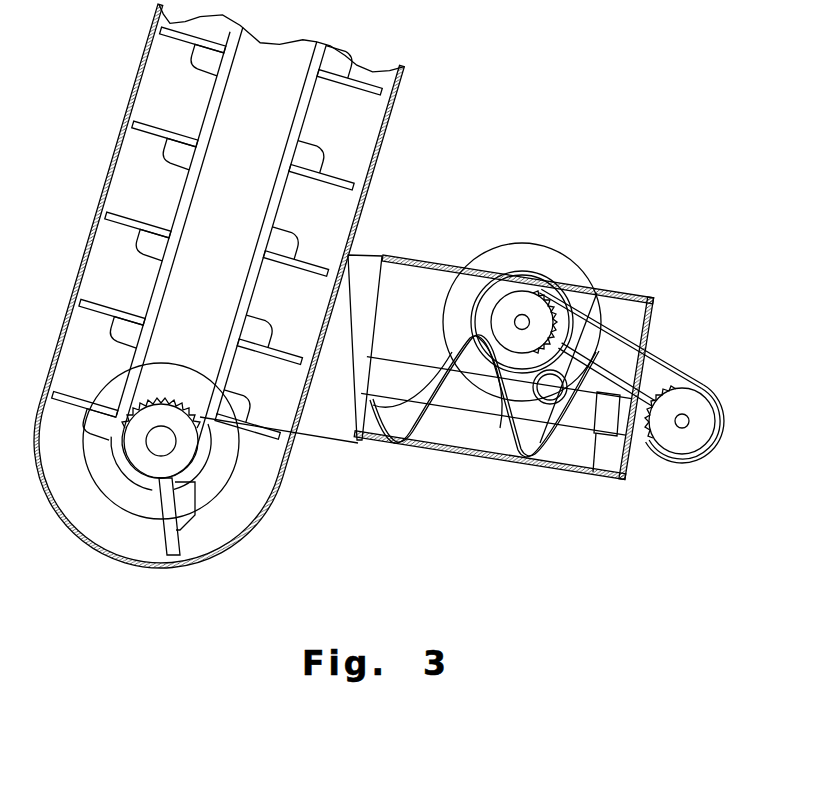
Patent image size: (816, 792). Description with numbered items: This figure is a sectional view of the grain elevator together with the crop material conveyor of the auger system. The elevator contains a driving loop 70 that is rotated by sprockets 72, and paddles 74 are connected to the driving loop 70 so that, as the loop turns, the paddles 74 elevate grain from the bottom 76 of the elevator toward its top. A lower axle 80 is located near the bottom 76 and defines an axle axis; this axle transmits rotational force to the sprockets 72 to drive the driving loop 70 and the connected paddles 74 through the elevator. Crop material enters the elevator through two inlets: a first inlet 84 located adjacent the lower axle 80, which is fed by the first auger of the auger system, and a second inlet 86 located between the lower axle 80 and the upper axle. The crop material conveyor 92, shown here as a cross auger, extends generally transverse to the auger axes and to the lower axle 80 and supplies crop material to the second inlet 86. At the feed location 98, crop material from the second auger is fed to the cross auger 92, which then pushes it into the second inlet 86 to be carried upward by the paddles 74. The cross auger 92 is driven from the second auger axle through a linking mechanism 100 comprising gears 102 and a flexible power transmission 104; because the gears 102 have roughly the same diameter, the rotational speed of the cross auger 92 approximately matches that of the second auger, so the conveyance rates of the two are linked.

The driving loop 70 is at (185, 205).
The sprockets 72 is at (157, 412).
The paddles 74 is at (293, 353).
The bottom 76 is at (133, 566).
The lower axle 80 is at (158, 443).
The first inlet 84 is at (217, 468).
The second inlet 86 is at (340, 408).
The crop material conveyor 92 is at (397, 345).
The feed location 98 is at (515, 490).
The linking mechanism 100 is at (634, 318).
The gears 102 is at (528, 308).
The flexible power transmission 104 is at (590, 395).